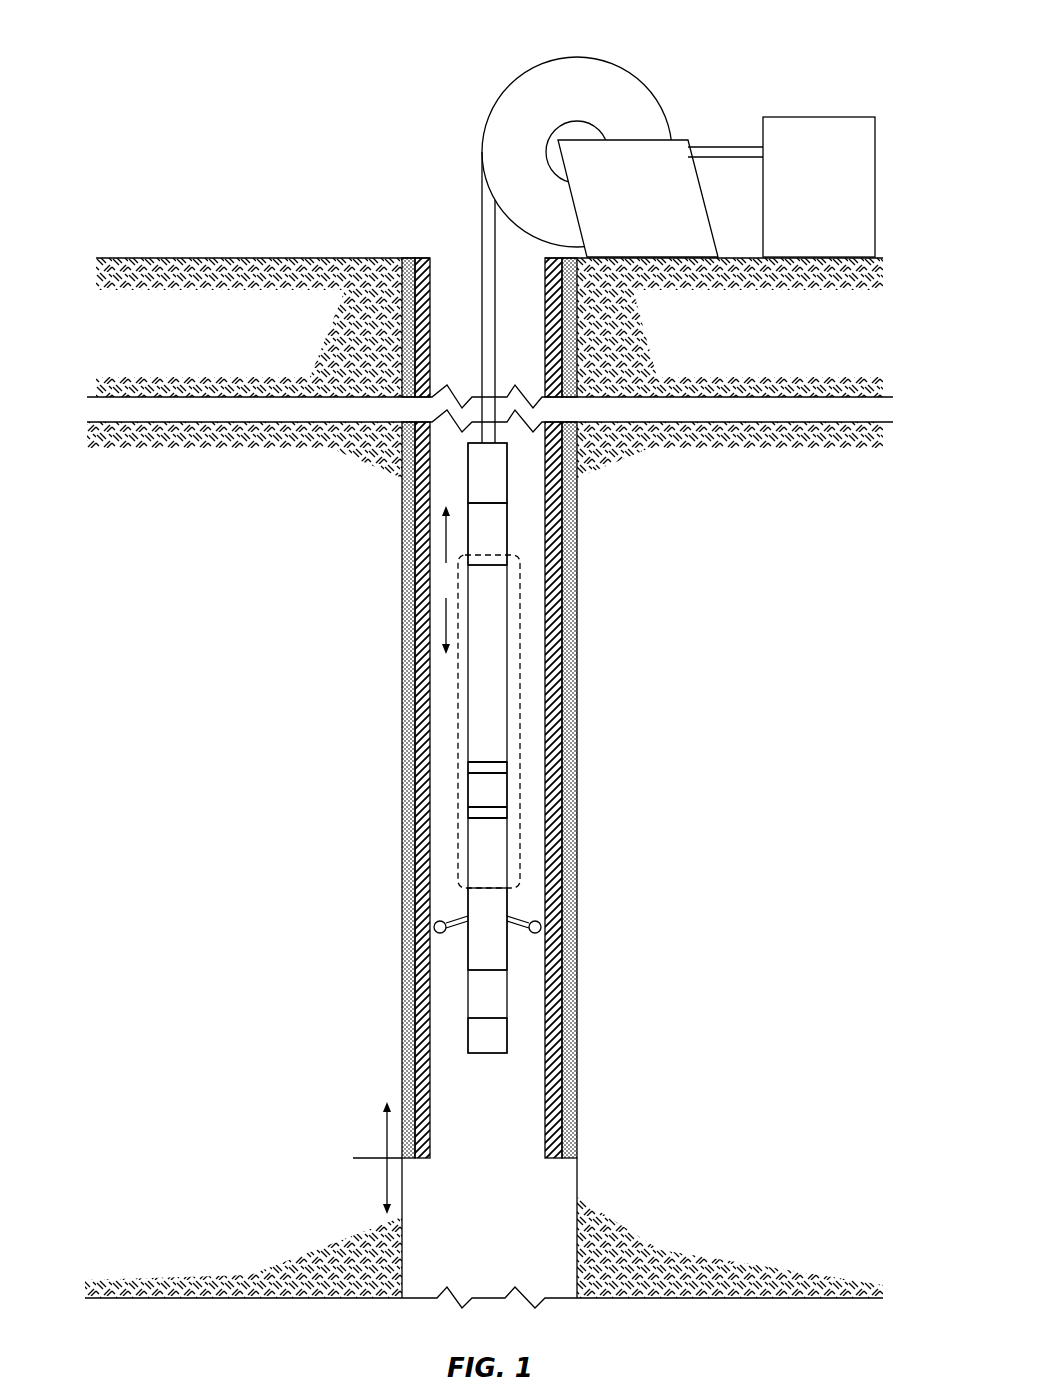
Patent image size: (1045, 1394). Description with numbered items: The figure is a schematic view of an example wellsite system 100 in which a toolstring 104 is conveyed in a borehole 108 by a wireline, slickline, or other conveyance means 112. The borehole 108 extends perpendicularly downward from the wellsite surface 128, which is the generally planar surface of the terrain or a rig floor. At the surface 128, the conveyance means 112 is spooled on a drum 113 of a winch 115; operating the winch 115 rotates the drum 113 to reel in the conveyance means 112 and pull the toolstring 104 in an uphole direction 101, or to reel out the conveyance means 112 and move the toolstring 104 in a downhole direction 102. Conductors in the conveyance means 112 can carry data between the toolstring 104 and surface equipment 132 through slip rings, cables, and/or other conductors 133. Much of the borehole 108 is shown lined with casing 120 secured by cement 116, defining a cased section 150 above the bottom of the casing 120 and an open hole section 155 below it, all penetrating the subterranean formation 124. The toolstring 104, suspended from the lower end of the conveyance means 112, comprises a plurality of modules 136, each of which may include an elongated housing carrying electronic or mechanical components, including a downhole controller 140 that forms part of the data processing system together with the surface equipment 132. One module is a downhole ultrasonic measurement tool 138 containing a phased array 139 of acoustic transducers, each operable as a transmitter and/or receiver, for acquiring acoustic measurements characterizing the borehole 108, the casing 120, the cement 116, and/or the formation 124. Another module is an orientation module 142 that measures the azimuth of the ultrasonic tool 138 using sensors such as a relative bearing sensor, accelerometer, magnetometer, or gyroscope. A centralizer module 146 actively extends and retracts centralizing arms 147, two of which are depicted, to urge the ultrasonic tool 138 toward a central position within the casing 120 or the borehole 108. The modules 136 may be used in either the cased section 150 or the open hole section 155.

The wellsite system 100 is at (285, 68).
The uphole direction 101 is at (448, 540).
The downhole direction 102 is at (448, 623).
The toolstring 104 is at (484, 1067).
The borehole 108 is at (448, 282).
The conveyance means 112 is at (497, 352).
The drum 113 is at (513, 85).
The winch 115 is at (708, 221).
The cement 116 is at (404, 1057).
The casing 120 is at (545, 1146).
The subterranean formation 124 is at (353, 386).
The wellsite surface 128 is at (190, 254).
The surface equipment 132 is at (816, 117).
The slip rings, cables, and/or other conductors 133 is at (722, 146).
The modules 136 is at (508, 1000).
The downhole ultrasonic measurement tool 138 is at (520, 720).
The phased array 139 is at (483, 797).
The downhole controller 140 is at (508, 480).
The orientation module 142 is at (508, 538).
The centralizer module 146 is at (508, 900).
The centralizing arms 147 is at (441, 947).
The cased section 150 is at (368, 1130).
The open hole section 155 is at (368, 1186).